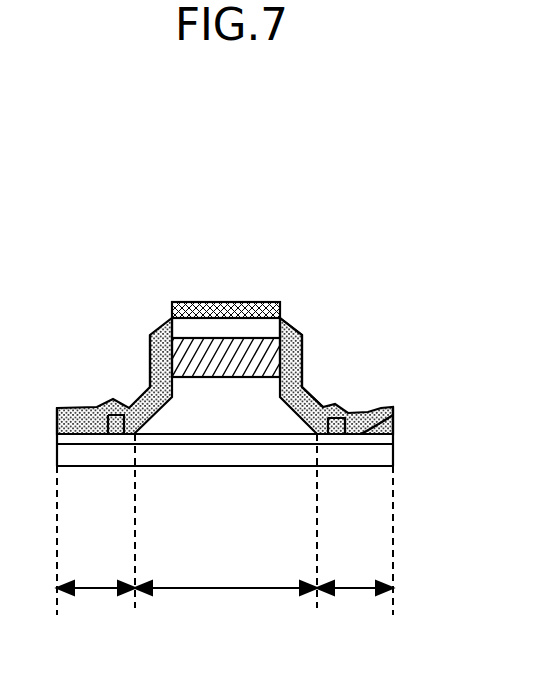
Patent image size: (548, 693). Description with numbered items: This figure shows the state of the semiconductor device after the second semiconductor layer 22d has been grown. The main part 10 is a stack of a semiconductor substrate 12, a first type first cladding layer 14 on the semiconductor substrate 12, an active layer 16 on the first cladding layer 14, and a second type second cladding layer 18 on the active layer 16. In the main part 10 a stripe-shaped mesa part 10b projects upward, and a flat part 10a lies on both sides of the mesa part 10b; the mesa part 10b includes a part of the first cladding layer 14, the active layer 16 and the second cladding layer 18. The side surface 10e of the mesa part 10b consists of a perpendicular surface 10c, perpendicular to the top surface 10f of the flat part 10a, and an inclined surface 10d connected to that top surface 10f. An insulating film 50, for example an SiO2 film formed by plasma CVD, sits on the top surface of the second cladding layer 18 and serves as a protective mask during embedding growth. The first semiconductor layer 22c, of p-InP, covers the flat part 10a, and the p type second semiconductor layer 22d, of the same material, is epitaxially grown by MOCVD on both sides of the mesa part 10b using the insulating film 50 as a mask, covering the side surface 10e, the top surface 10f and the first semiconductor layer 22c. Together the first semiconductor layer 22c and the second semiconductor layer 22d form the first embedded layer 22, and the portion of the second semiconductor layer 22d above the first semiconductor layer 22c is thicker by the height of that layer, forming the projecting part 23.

The main part 10 is at (297, 521).
The flat part 10a is at (355, 623).
The mesa part 10b is at (227, 588).
The perpendicular surface 10c is at (302, 345).
The inclined surface 10d is at (303, 390).
The side surface 10e is at (442, 253).
The top surface 10f is at (393, 415).
The semiconductor substrate 12 is at (165, 453).
The first cladding layer 14 is at (203, 418).
The active layer 16 is at (220, 360).
The second cladding layer 18 is at (262, 330).
The first embedded layer 22 is at (135, 233).
The first semiconductor layer 22c is at (110, 405).
The second semiconductor layer 22d is at (152, 362).
The projecting part 23 is at (334, 405).
The insulating film 50 is at (232, 302).